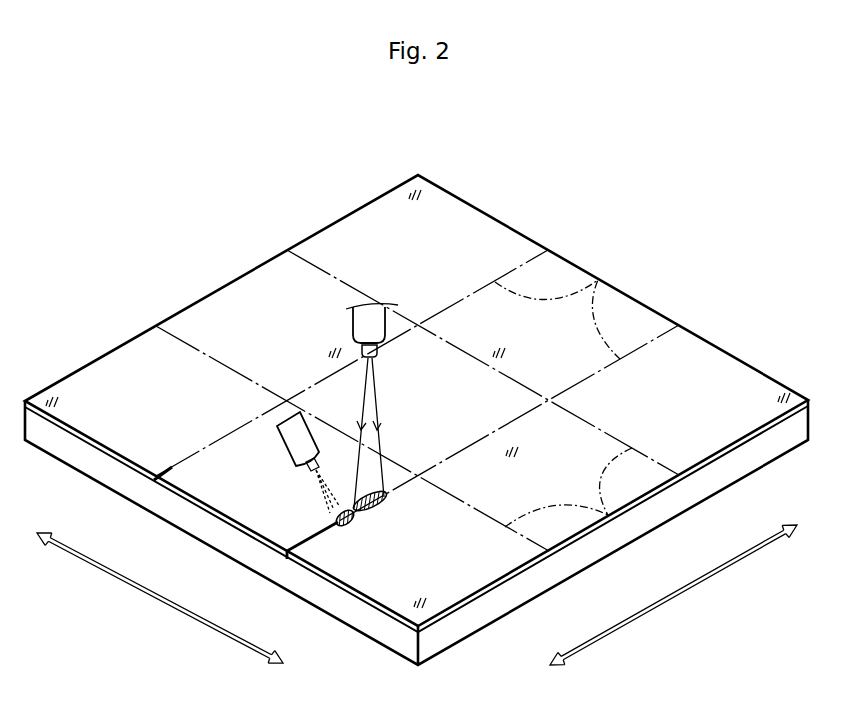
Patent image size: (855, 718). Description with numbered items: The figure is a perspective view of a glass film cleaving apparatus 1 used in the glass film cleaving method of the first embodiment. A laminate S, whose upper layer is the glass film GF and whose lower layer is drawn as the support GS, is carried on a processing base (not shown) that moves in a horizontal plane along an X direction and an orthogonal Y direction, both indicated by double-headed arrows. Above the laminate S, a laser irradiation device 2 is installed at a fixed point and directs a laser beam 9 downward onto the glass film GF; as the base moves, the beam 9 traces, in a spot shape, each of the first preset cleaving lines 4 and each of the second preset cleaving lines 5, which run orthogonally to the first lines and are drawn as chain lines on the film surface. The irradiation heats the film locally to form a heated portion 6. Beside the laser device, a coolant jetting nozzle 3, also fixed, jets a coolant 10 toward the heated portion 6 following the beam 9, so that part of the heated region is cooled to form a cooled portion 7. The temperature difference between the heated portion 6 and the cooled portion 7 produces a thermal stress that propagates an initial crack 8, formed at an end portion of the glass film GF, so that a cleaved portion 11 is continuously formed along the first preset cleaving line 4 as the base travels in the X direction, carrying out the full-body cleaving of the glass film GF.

The glass film cleaving apparatus 1 is at (586, 197).
The laser irradiation device 2 is at (352, 321).
The coolant jetting nozzle 3 is at (289, 449).
The first preset cleaving line 4 is at (598, 280).
The second preset cleaving line 5 is at (608, 515).
The heated portion 6 is at (375, 509).
The cooled portion 7 is at (344, 527).
The initial crack 8 is at (160, 474).
The laser beam 9 is at (377, 400).
The coolant 10 is at (325, 498).
The cleaved portion 11 is at (322, 527).
The laminate S is at (416, 400).
The glass film GF is at (723, 377).
The glass support GS is at (748, 461).
The X direction X is at (677, 597).
The Y direction Y is at (160, 599).